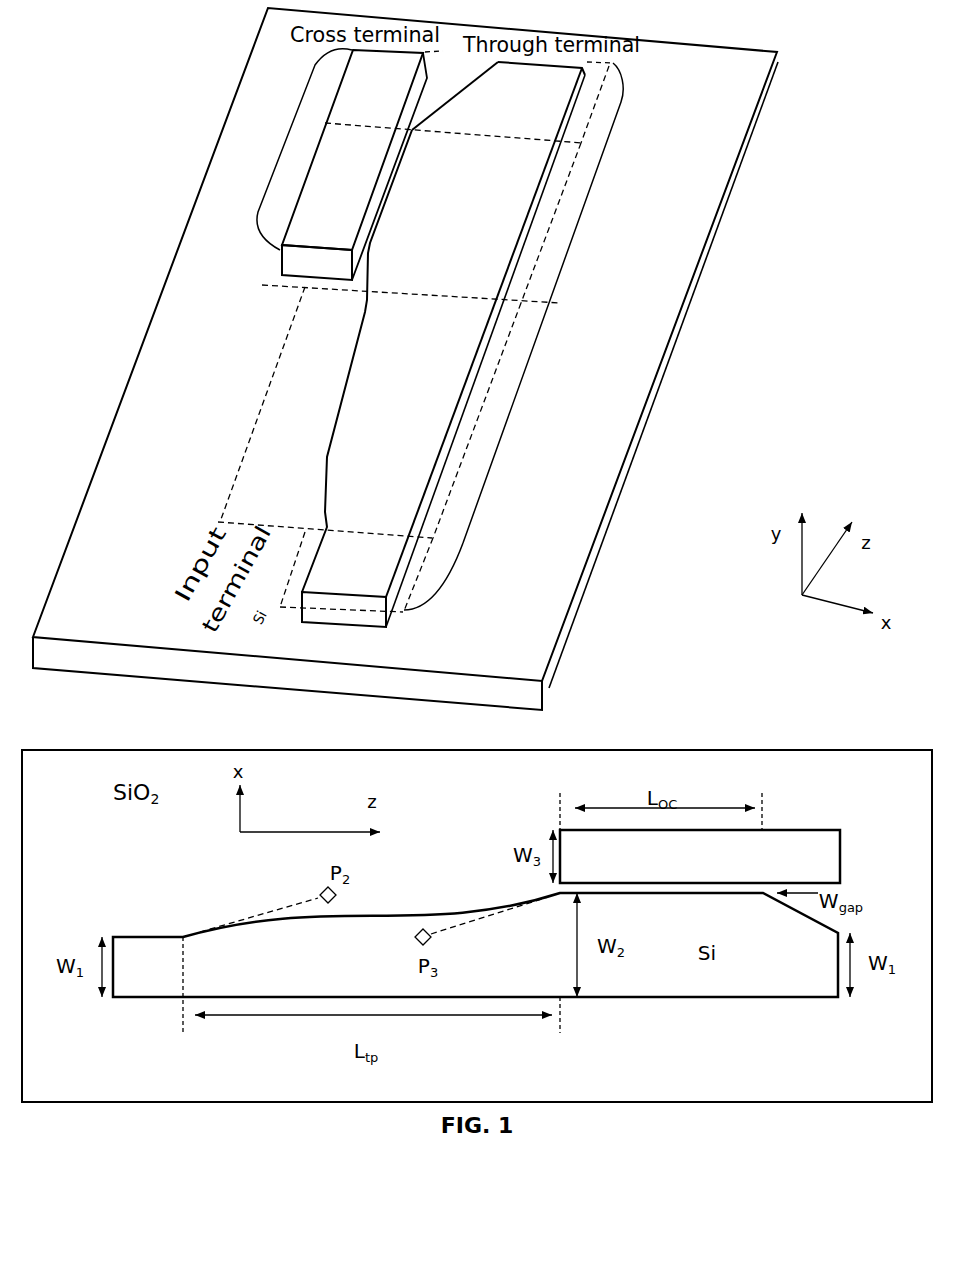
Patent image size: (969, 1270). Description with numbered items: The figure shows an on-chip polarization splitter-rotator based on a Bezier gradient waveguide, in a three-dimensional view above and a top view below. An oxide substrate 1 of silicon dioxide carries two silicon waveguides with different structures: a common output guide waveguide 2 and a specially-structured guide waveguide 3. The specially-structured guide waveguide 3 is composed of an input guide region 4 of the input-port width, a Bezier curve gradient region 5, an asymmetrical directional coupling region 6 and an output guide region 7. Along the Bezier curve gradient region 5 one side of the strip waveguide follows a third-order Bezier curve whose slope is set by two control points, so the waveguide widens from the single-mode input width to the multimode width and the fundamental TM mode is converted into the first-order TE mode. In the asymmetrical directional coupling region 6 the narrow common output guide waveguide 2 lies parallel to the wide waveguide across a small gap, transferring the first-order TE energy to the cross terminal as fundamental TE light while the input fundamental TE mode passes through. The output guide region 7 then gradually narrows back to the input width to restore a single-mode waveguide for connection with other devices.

The substrate 1 is at (433, 692).
The common output guide waveguide 2 is at (287, 140).
The specially-structured guide waveguide 3 is at (535, 342).
The input guide region of a special waveguide structure 4 is at (433, 565).
The Bezier curve gradient region of a special waveguide structure 5 is at (500, 385).
The asymmetrical directional coupling region of a special waveguide structure 6 is at (560, 232).
The output guide region 7 is at (597, 122).